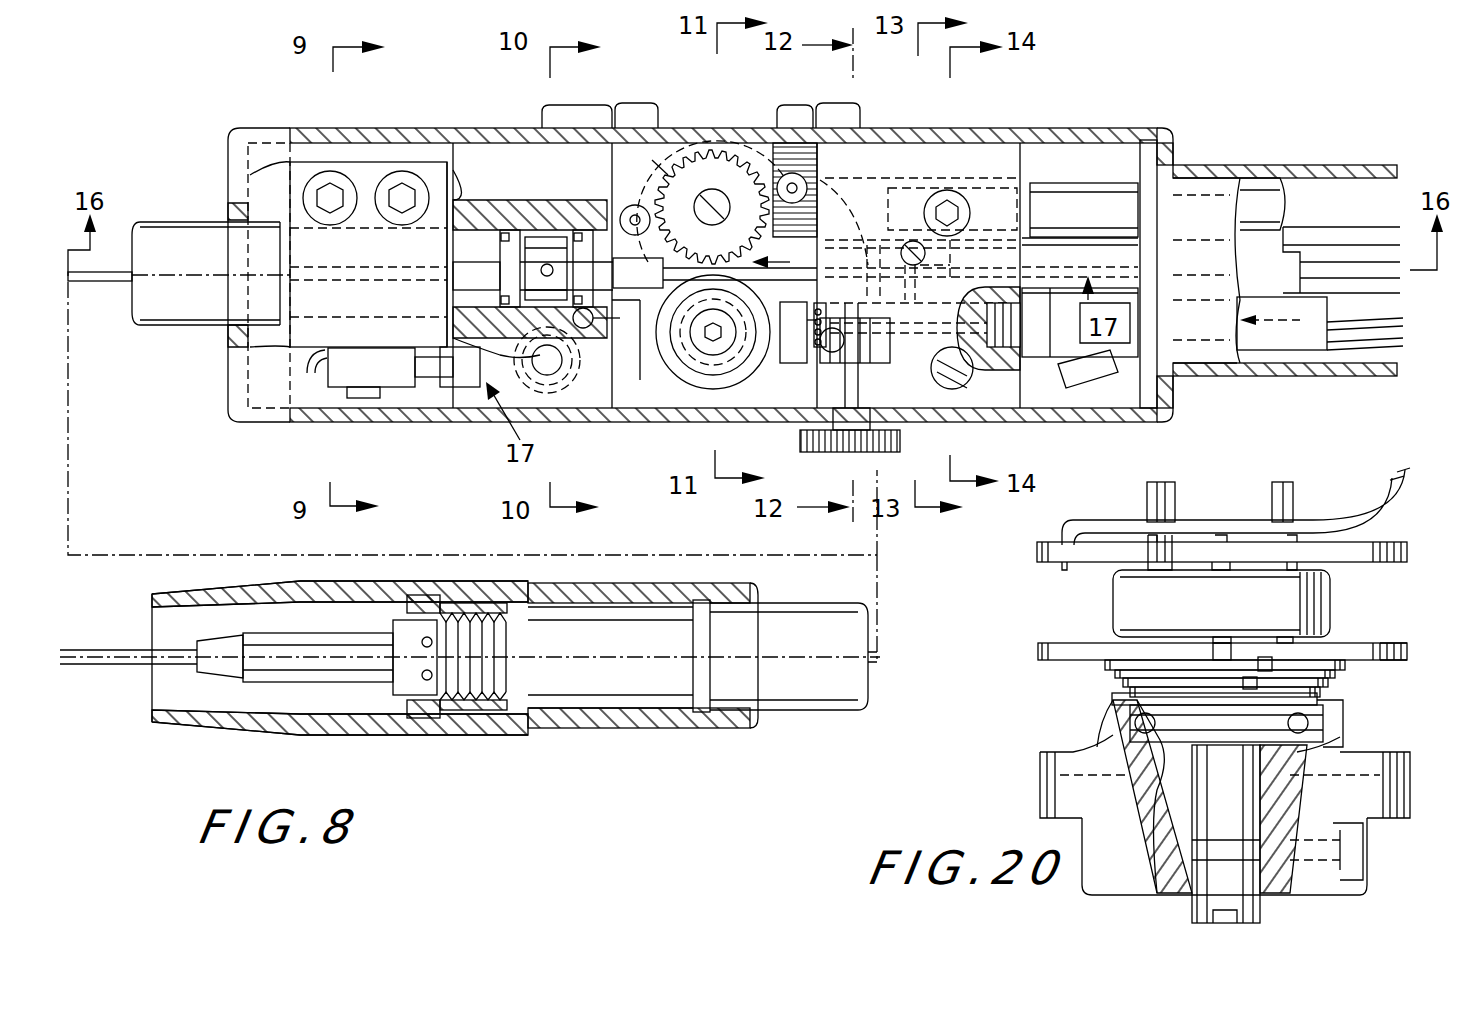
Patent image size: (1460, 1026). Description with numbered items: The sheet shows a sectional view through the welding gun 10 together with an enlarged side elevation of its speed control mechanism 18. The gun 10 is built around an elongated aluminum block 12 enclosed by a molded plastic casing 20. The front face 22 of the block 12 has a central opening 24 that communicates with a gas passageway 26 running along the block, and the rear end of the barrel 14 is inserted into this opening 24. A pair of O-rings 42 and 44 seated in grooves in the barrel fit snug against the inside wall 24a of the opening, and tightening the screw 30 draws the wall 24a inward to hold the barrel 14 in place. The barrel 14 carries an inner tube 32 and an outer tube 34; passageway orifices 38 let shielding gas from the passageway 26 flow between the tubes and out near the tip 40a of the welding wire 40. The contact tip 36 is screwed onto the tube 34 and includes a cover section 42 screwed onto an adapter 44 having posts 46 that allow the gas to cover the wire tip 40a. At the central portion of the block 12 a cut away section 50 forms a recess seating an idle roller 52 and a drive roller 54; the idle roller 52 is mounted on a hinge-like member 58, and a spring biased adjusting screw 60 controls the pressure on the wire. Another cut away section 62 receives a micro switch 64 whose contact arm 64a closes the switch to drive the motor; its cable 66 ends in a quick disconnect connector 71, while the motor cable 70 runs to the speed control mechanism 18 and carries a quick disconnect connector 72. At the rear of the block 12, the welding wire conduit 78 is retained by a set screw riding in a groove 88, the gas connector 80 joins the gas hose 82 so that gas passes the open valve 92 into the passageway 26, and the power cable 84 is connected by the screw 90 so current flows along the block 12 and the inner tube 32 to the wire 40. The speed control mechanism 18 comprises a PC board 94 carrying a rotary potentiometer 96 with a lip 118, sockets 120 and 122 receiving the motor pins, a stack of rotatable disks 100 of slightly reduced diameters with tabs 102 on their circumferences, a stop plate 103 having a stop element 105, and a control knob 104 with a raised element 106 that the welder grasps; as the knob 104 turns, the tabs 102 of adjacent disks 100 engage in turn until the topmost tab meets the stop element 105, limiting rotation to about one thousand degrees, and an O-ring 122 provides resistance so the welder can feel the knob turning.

In FIG. 8, the welding gun 10 is at (1198, 108).
In FIG. 8, the elongated aluminum block 12 is at (472, 128).
In FIG. 8, the barrel 14 is at (166, 218).
In FIG. 20, the speed control mechanism 18 is at (1020, 762).
In FIG. 8, the molded plastic casing 20 is at (226, 400).
In FIG. 8, the front face 22 is at (290, 340).
In FIG. 8, the central opening 24 is at (300, 238).
In FIG. 8, the inside wall of opening 24a is at (455, 232).
In FIG. 8, the passageway 26 is at (631, 350).
In FIG. 8, the screw 30 is at (328, 175).
In FIG. 8, the inner tube 32 is at (628, 256).
In FIG. 8, the outer tube 34 is at (450, 298).
In FIG. 8, the contact tip 36 is at (230, 735).
In FIG. 8, the passageway orifices 38 is at (547, 264).
In FIG. 8, the welding wire 40 is at (112, 283).
In FIG. 8, the wire tip 40a is at (100, 668).
In FIG. 8, the O-ring 42 is at (508, 230).
In FIG. 8, the O-ring 44 is at (582, 230).
In FIG. 8, the posts 46 is at (425, 680).
In FIG. 8, the cut away section 50 is at (775, 148).
In FIG. 8, the idle roller 52 is at (695, 385).
In FIG. 8, the drive roller 54 is at (697, 150).
In FIG. 8, the hinge like member 58 is at (800, 370).
In FIG. 8, the spring biased adjusting screw 60 is at (858, 452).
In FIG. 8, the cut away section 62 is at (475, 395).
In FIG. 8, the micro switch 64 is at (370, 388).
In FIG. 8, the contact arm 64a is at (435, 378).
In FIG. 8, the cable 66 is at (312, 350).
In FIG. 8, the cable 70 is at (1072, 392).
In FIG. 8, the quick disconnect connector 71 is at (1150, 408).
In FIG. 8, the quick disconnect connector 72 is at (1092, 392).
In FIG. 8, the welding wire conduit 78 is at (1250, 250).
In FIG. 8, the gas connector 80 is at (1035, 300).
In FIG. 8, the gas hose 82 is at (1326, 350).
In FIG. 8, the power cable 84 is at (1278, 195).
In FIG. 8, the groove 88 is at (960, 262).
In FIG. 8, the screw 90 is at (942, 190).
In FIG. 8, the open valve 92 is at (565, 398).
In FIG. 20, the PC board 94 is at (1037, 555).
In FIG. 20, the rotary potentiometer 96 is at (1116, 598).
In FIG. 20, the rotatable disks 100 is at (1323, 693).
In FIG. 20, the tabs 102 is at (1250, 677).
In FIG. 20, the stop plate 103 is at (1052, 660).
In FIG. 20, the control knob 104 is at (1036, 790).
In FIG. 20, the stop element 105 is at (1225, 643).
In FIG. 20, the raised element 106 is at (1095, 880).
In FIG. 20, the lip 118 is at (1382, 643).
In FIG. 20, the socket 120 is at (1177, 492).
In FIG. 20, the socket 122 is at (1296, 492).